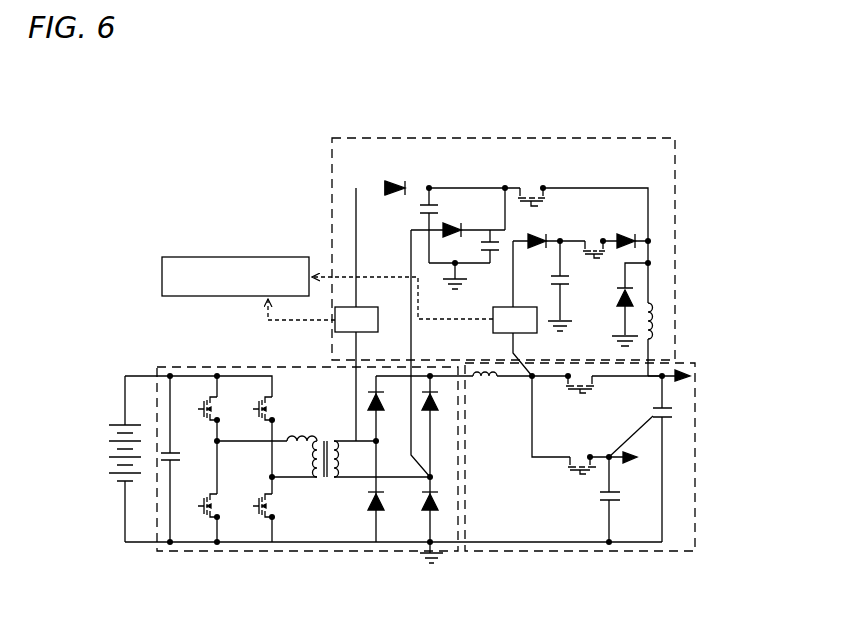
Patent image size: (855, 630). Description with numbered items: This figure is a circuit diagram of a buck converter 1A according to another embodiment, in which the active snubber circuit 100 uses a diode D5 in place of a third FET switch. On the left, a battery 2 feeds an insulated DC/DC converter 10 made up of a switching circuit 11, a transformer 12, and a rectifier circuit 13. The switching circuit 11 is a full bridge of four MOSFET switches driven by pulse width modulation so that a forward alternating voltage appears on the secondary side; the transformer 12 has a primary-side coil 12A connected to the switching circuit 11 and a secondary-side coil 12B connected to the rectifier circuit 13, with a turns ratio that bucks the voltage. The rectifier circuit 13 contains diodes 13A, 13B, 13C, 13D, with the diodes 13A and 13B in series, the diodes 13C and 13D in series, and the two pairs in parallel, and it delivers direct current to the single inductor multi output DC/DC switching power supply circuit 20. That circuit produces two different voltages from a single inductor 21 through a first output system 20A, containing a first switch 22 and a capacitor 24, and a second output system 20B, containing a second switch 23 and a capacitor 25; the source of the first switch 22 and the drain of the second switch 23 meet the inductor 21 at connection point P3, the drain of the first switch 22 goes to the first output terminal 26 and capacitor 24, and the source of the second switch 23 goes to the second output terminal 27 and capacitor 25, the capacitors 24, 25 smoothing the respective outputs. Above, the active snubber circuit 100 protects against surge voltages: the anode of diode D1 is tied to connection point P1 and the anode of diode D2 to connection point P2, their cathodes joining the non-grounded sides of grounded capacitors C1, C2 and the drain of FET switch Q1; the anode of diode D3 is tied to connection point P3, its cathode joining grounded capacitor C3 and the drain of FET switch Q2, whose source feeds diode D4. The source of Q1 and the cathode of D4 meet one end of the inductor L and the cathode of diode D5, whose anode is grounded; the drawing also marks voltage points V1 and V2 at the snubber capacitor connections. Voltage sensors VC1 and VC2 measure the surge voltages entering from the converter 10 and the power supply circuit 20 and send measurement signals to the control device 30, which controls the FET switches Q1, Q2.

The buck converter 1A is at (678, 136).
The battery 2 is at (110, 477).
The insulated DC/DC converter 10 is at (194, 364).
The switching circuit 11 is at (225, 372).
The transformer 12 is at (322, 458).
The primary-side coil 12A is at (322, 481).
The secondary-side coil 12B is at (332, 481).
The rectifier circuit 13 is at (415, 441).
The diode 13A is at (371, 408).
The diode 13B is at (381, 513).
The diode 13C is at (438, 416).
The diode 13D is at (436, 513).
The single inductor multi output DC/DC switching power supply circuit 20 is at (702, 345).
The first output system 20A is at (699, 372).
The second output system 20B is at (647, 456).
The inductor 21 is at (482, 382).
The first switch 22 is at (581, 391).
The second switch 23 is at (582, 475).
The capacitor 24 is at (675, 411).
The capacitor 25 is at (622, 494).
The first output terminal 26 is at (671, 360).
The second output terminal 27 is at (610, 455).
The control device 30 is at (232, 257).
The active snubber circuit 100 is at (622, 134).
The diode D1 is at (392, 184).
The diode D2 is at (452, 224).
The diode D3 is at (537, 237).
The diode D4 is at (629, 233).
The diode D5 is at (630, 291).
The capacitor C1 is at (436, 204).
The capacitor C2 is at (490, 258).
The capacitor C3 is at (554, 288).
The FET switch Q1 is at (546, 198).
The FET switch Q2 is at (606, 244).
The inductor L is at (658, 312).
The voltage node V1 is at (427, 177).
The voltage node V2 is at (561, 229).
The connection point P1 is at (374, 440).
The connection point P2 is at (433, 478).
The connection point P3 is at (531, 379).
The voltage sensor VC1 is at (356, 319).
The voltage sensor VC2 is at (515, 308).